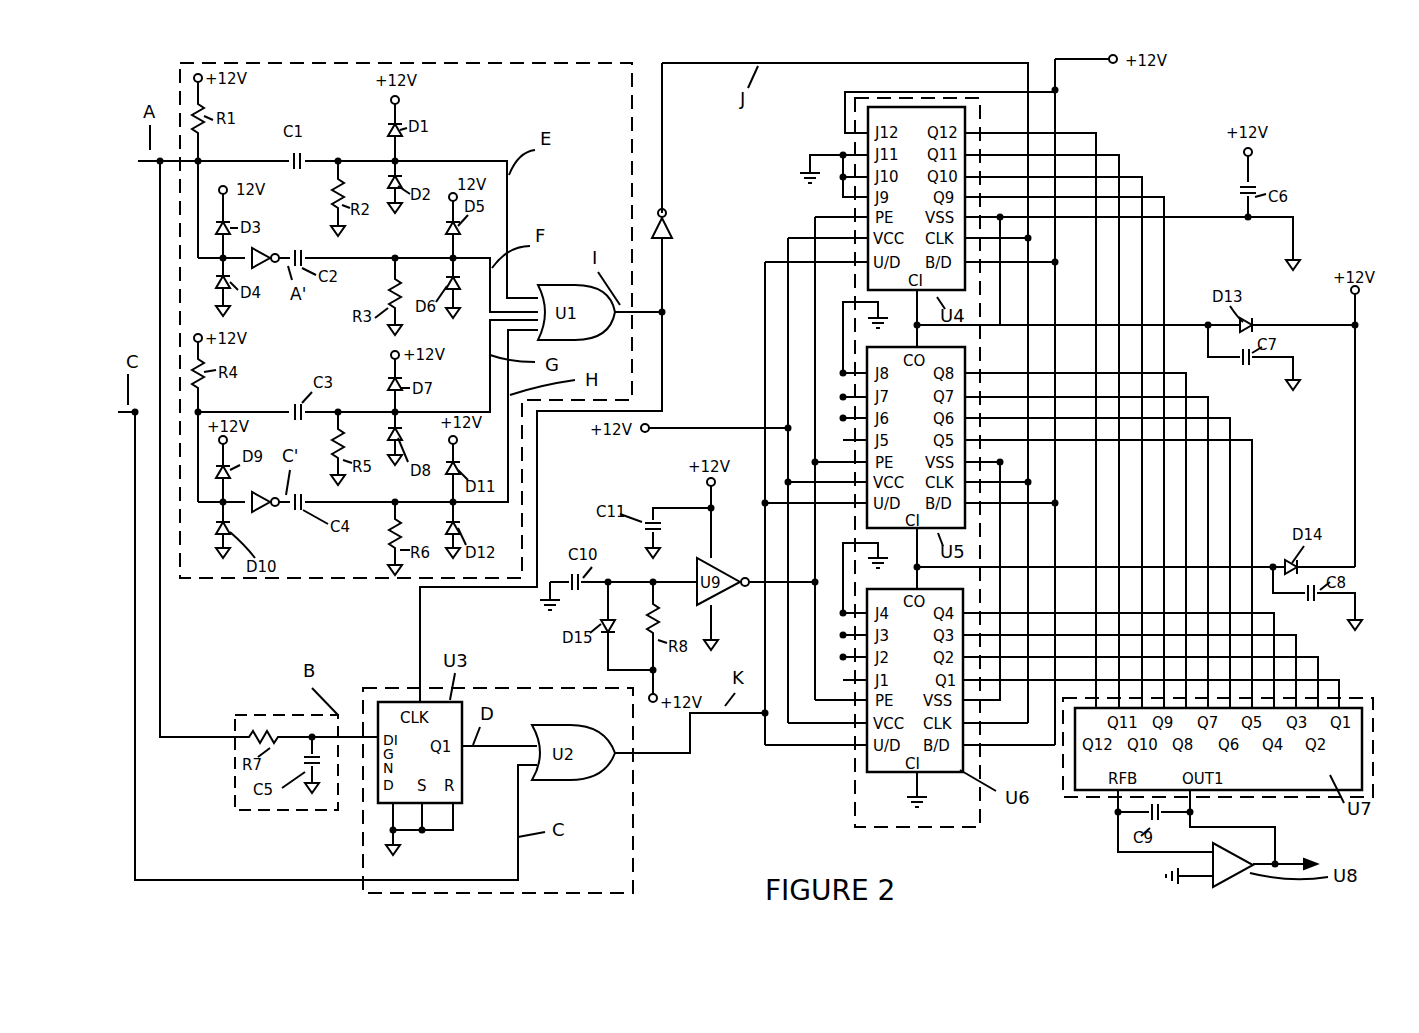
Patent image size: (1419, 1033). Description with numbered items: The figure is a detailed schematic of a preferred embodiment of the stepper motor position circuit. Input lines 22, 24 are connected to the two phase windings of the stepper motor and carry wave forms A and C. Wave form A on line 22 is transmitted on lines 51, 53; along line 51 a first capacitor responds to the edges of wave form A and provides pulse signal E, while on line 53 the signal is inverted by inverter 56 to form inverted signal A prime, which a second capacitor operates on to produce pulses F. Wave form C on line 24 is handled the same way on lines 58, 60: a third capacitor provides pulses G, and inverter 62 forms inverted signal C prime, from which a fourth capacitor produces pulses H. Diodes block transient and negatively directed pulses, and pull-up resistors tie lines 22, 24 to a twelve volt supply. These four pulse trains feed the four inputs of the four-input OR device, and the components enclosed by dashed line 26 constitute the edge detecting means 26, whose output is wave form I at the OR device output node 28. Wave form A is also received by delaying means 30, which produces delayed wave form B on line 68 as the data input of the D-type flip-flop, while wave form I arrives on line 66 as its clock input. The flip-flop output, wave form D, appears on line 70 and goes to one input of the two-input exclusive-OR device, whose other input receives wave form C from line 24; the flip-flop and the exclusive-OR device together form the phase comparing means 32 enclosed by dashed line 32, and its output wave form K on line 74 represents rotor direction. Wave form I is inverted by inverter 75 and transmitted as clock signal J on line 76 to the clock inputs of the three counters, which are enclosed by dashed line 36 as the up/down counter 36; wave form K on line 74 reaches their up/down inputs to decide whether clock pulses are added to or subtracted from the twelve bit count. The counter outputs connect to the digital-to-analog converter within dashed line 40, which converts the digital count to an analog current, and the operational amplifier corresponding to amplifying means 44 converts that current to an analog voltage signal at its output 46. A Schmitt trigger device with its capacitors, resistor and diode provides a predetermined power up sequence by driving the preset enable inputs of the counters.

The input line 22 is at (153, 170).
The input line 24 is at (128, 422).
The edge detecting means 26 is at (188, 580).
The OR gate output node (signal I) 28 is at (665, 315).
The delaying means 30 is at (268, 812).
The phase comparing means 32 is at (633, 825).
The up/down counter 36 is at (928, 828).
The digital-to-analog converter 40 is at (1358, 696).
The amplifying means 44 is at (1235, 888).
The analog output 46 is at (1283, 862).
The line 51 is at (238, 160).
The line 53 is at (214, 262).
The inverter 56 is at (268, 248).
The line 58 is at (238, 410).
The line 60 is at (212, 507).
The inverter 62 is at (262, 512).
The line 66 is at (538, 466).
The line 68 is at (355, 737).
The line 70 is at (492, 752).
The line 74 is at (668, 756).
The inverter 75 is at (670, 226).
The line 76 is at (665, 147).